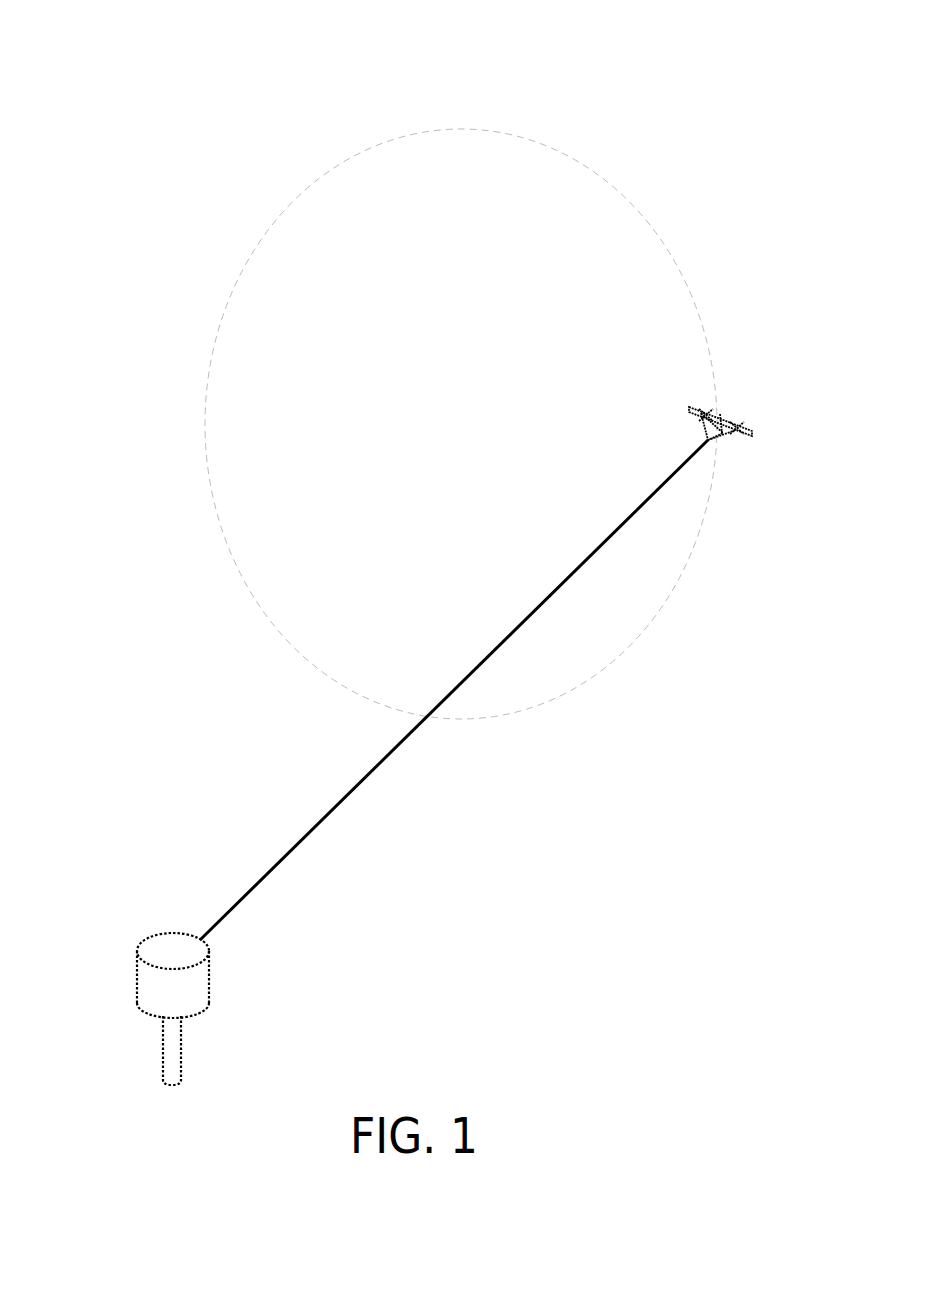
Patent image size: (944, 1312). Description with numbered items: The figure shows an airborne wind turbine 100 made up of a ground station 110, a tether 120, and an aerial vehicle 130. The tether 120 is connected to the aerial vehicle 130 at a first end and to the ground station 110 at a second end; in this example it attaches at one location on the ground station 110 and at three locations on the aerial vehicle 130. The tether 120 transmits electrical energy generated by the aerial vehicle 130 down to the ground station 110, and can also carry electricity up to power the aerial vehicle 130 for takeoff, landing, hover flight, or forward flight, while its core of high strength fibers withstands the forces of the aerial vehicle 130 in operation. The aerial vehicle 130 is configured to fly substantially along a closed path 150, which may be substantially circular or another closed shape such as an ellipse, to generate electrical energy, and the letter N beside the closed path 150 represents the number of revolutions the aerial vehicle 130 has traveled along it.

The airborne wind turbine 100 is at (220, 72).
The ground station 110 is at (112, 922).
The tether 120 is at (381, 766).
The aerial vehicle 130 is at (765, 480).
The closed path 150 is at (226, 305).